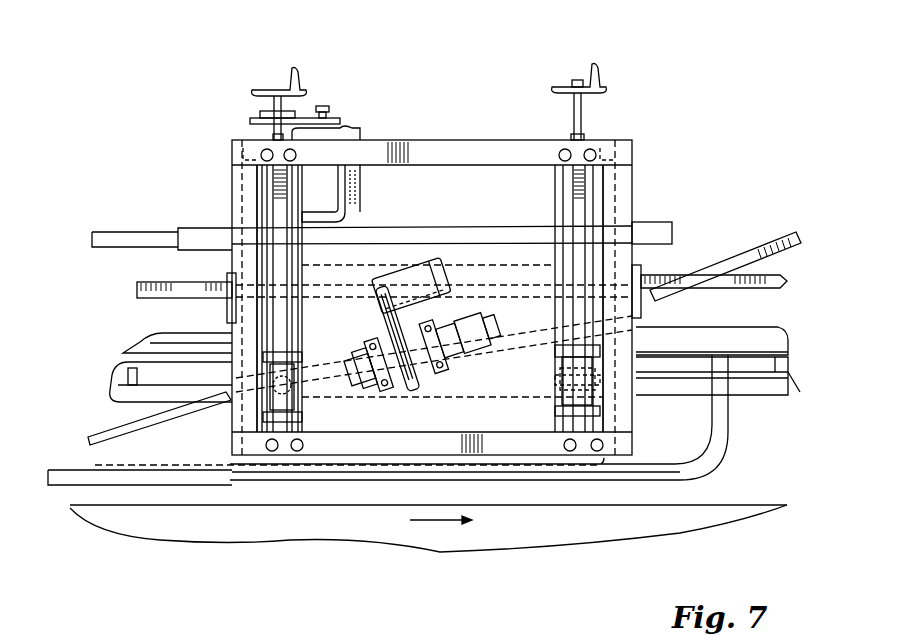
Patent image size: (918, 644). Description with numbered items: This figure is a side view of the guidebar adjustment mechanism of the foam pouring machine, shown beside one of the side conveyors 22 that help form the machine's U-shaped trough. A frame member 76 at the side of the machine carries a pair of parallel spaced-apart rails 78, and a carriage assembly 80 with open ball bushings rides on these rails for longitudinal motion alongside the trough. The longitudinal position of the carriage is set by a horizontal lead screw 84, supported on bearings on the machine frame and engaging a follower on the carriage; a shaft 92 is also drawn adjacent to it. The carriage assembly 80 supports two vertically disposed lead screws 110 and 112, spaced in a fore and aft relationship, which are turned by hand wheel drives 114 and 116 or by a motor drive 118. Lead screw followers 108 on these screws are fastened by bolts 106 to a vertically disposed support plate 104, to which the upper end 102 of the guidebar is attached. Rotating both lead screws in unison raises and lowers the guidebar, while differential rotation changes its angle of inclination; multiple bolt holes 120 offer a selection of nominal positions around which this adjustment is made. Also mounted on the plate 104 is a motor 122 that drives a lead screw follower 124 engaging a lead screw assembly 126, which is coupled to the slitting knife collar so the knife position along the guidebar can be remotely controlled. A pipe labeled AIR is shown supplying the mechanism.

The side conveyor 22 is at (584, 520).
The frame member 76 is at (122, 392).
The rails 78 is at (168, 337).
The carriage assembly 80 is at (235, 158).
The lead screw 84 is at (150, 290).
The shaft 92 is at (120, 233).
The upper end of the guidebar 102 is at (66, 476).
The support plate 104 is at (190, 462).
The bolts 106 is at (600, 384).
The lead screw followers 108 is at (296, 420).
The lead screw 110 is at (583, 200).
The lead screw 112 is at (278, 200).
The hand wheel drive 114 is at (556, 88).
The hand wheel drive 116 is at (262, 92).
The motor drive 118 is at (346, 130).
The bolt holes 120 is at (290, 354).
The motor 122 is at (422, 256).
The lead screw follower 124 is at (412, 374).
The lead screw assembly 126 is at (797, 234).
The air supply pipe AIR is at (718, 353).